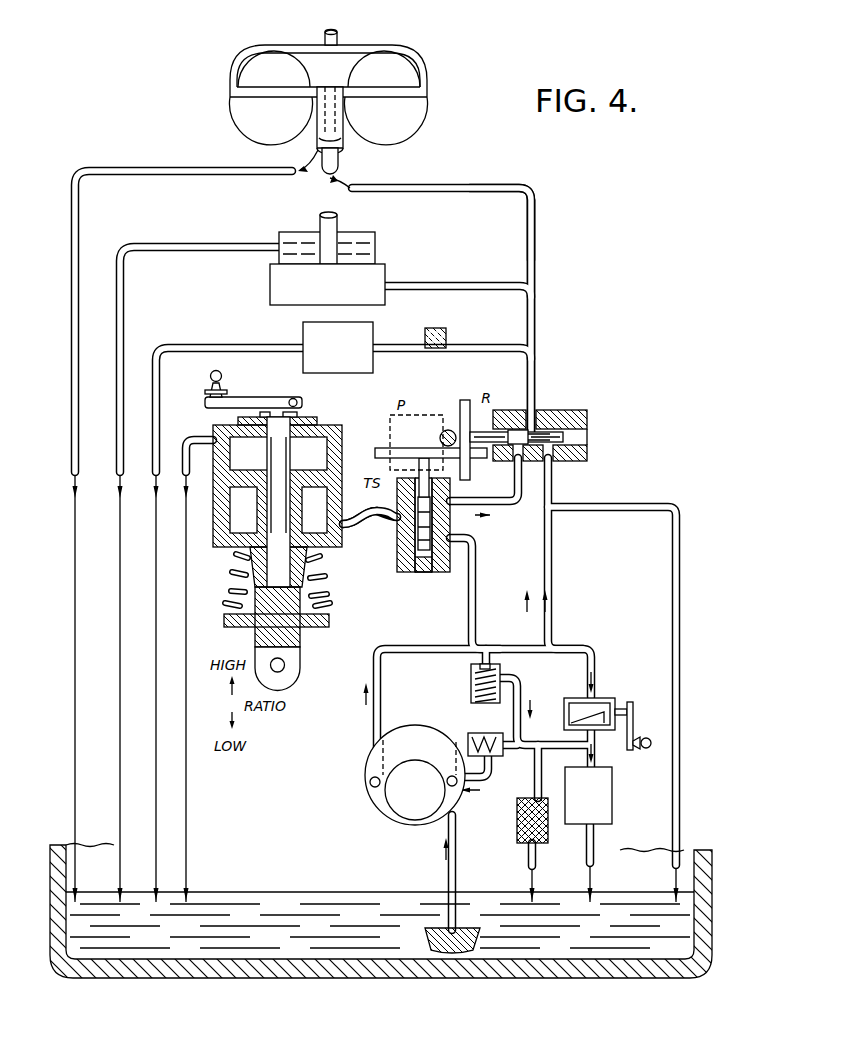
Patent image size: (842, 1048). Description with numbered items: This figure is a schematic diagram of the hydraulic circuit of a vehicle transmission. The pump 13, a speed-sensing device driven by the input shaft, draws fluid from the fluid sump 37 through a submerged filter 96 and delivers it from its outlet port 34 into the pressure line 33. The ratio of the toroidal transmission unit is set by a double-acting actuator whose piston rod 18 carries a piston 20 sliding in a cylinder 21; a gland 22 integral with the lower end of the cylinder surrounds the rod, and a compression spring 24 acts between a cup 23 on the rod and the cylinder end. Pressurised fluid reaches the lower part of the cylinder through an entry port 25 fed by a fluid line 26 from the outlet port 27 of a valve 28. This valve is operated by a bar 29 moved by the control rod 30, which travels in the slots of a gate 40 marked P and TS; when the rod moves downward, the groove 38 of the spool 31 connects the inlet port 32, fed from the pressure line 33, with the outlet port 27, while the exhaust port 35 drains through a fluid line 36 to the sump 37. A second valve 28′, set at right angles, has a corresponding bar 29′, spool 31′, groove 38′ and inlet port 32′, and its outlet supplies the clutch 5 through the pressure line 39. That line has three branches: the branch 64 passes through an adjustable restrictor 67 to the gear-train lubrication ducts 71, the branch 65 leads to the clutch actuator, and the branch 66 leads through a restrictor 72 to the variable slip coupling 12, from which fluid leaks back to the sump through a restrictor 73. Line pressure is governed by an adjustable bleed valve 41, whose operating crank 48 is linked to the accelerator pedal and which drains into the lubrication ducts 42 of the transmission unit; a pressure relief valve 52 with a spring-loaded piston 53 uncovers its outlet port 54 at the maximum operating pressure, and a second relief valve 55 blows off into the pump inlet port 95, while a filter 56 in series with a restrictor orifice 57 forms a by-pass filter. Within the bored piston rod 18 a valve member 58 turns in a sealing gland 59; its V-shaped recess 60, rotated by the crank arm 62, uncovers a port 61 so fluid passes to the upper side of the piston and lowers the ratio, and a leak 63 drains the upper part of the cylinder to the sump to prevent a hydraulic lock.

The clutch 5 is at (380, 253).
The variable slip coupling 12 is at (432, 65).
The pump 13 is at (400, 828).
The piston rod 18 is at (301, 645).
The piston 20 is at (240, 469).
The cylinder 21 is at (343, 514).
The gland 22 is at (240, 585).
The cup 23 is at (326, 622).
The compression spring 24 is at (326, 586).
The entry port 25 is at (347, 530).
The fluid line 26 is at (376, 548).
The outlet port 27 is at (366, 522).
The valve 28 is at (440, 575).
The second valve 28′ is at (586, 421).
The bar 29 is at (420, 448).
The bar of second valve 29′ is at (470, 400).
The control rod 30 is at (449, 430).
The spool 31 is at (425, 558).
The spool of second valve 31′ is at (585, 441).
The inlet port 32 is at (470, 541).
The inlet port of second valve 32′ is at (560, 476).
The pressure line 33 is at (420, 648).
The outlet port 34 is at (370, 792).
The exhaust port 35 is at (526, 476).
The fluid line 36 is at (675, 582).
The fluid sump 37 is at (316, 905).
The groove 38 is at (423, 520).
The groove of second spool 38′ is at (514, 430).
The pressure line 39 is at (535, 329).
The gate 40 is at (391, 428).
The adjustable bleed valve 41 is at (583, 701).
The lubrication ducts of transmission unit 42 is at (612, 800).
The operating crank 48 is at (633, 722).
The pressure relief valve 52 is at (478, 700).
The piston 53 is at (473, 672).
The outlet port 54 is at (505, 680).
The pressure relief valve 55 is at (487, 733).
The filter 56 is at (519, 831).
The restrictor orifice 57 is at (532, 778).
The valve member 58 is at (292, 433).
The sealing gland 59 is at (315, 418).
The V-shaped recess 60 is at (279, 451).
The port 61 is at (316, 510).
The crank arm 62 is at (233, 397).
The leak 63 is at (208, 436).
The branch 64 is at (481, 346).
The branch 65 is at (470, 285).
The branch 66 is at (526, 184).
The adjustable restrictor 67 is at (437, 331).
The lubrication ducts of gear train 71 is at (374, 340).
The restrictor 72 is at (487, 183).
The restrictor 73 is at (250, 168).
The inlet port 95 is at (457, 798).
The filter 96 is at (434, 940).